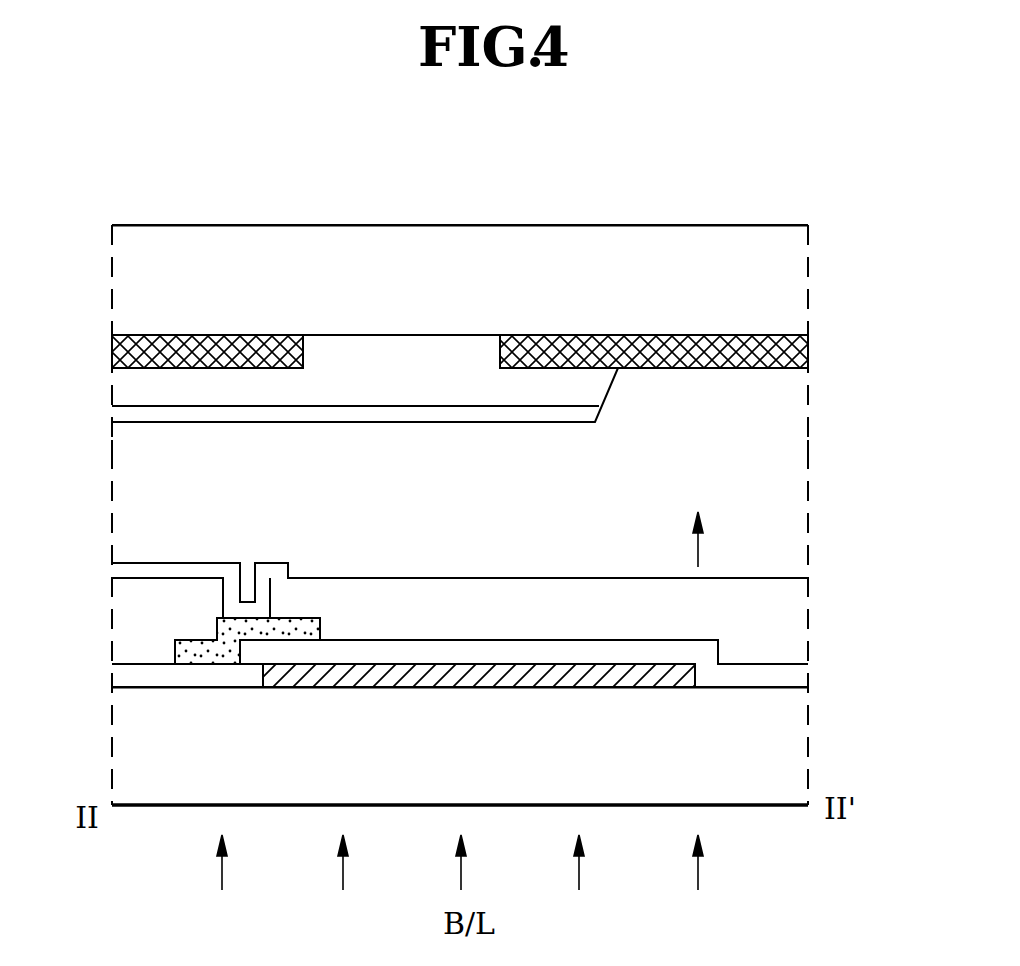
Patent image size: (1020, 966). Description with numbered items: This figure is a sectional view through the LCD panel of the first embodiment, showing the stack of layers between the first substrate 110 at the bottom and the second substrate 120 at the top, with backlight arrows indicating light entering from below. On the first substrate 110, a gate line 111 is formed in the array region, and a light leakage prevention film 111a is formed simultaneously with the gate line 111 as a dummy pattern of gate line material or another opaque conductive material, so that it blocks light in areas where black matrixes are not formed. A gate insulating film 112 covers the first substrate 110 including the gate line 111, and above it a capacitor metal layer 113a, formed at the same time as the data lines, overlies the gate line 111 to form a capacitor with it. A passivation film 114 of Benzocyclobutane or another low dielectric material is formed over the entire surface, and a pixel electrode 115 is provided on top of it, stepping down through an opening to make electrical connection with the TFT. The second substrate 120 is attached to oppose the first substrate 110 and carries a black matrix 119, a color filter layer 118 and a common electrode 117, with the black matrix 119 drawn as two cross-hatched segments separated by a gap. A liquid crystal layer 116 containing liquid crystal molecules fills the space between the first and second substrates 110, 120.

The first substrate 110 is at (793, 746).
The gate line 111 is at (290, 688).
The light leakage prevention film 111a is at (577, 688).
The gate insulating film 112 is at (793, 676).
The capacitor metal layer 113a is at (300, 618).
The passivation film 114 is at (793, 616).
The pixel electrode 115 is at (126, 569).
The liquid crystal layer 116 is at (795, 449).
The common electrode 117 is at (134, 422).
The color filter layer 118 is at (126, 389).
The black matrix 119 is at (800, 349).
The second substrate 120 is at (795, 263).